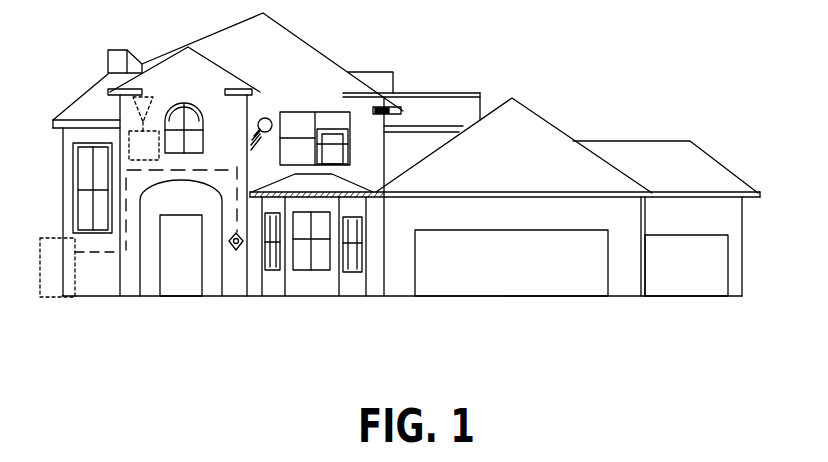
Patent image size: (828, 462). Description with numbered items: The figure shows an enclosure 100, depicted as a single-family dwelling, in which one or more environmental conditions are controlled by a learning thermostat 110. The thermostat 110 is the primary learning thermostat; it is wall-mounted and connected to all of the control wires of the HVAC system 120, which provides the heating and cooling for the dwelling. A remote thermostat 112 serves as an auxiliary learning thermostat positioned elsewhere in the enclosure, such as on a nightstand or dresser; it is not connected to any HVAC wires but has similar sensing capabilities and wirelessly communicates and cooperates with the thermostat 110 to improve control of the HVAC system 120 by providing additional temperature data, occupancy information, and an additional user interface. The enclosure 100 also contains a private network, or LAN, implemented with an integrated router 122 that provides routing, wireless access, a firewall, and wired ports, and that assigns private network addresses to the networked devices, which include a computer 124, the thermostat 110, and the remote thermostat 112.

The enclosure 100 is at (562, 36).
The thermostat 110 is at (237, 251).
The remote thermostat 112 is at (272, 118).
The HVAC system 120 is at (42, 298).
The integrated router 122 is at (153, 97).
The computer 124 is at (339, 128).